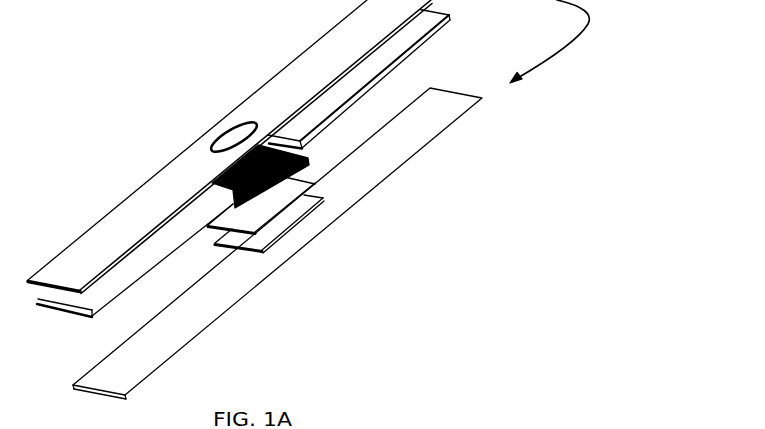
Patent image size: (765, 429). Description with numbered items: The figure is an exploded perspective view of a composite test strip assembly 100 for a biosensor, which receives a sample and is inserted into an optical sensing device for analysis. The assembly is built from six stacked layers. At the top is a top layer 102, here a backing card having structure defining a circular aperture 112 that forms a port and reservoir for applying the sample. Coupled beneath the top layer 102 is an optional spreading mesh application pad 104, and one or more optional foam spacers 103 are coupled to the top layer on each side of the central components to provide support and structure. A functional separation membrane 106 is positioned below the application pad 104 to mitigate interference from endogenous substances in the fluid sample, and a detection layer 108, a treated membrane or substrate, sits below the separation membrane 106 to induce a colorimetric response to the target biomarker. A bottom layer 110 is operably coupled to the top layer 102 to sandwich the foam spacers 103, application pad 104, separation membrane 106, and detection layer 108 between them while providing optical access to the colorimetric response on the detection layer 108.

The test strip assembly 100 is at (632, 428).
The top layer 102 is at (303, 70).
The foam spacers 103 is at (393, 43).
The spreading mesh application pad 104 is at (307, 155).
The separation membrane 106 is at (298, 181).
The detection layer 108 is at (298, 210).
The bottom layer 110 is at (228, 283).
The aperture 112 is at (222, 130).